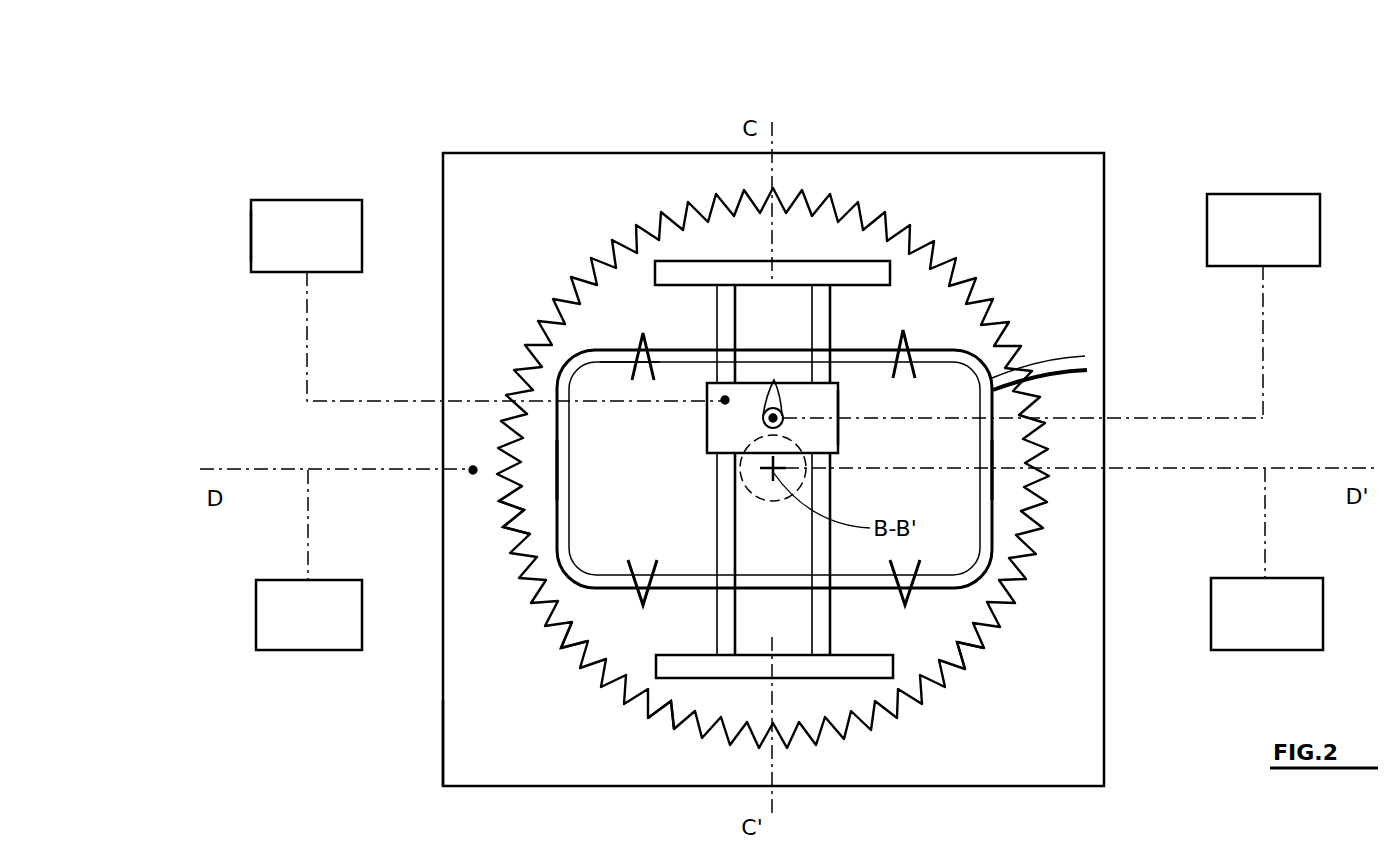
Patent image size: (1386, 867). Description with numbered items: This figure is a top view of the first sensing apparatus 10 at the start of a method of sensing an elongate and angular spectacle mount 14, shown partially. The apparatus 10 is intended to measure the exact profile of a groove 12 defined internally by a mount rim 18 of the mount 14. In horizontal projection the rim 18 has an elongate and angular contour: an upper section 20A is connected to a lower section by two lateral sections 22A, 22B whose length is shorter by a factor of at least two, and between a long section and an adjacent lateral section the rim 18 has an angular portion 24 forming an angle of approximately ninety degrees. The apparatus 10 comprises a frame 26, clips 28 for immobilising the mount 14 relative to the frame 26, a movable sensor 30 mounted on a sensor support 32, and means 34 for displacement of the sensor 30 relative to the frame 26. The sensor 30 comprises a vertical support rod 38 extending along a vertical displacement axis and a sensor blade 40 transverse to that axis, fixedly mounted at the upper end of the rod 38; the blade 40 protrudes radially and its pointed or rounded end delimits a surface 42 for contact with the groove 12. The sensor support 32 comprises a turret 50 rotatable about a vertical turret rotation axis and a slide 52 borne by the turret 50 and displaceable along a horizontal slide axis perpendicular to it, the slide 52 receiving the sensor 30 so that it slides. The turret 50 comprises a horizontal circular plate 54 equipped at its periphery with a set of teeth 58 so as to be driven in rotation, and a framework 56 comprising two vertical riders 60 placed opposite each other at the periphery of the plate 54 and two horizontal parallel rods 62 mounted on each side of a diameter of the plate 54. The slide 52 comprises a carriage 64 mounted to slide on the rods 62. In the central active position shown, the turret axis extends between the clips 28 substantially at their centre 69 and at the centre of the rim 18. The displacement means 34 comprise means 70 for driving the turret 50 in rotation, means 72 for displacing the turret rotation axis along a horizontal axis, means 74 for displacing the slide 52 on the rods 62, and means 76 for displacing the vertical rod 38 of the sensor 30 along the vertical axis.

The sensing apparatus 10 is at (1025, 122).
The groove 12 is at (605, 375).
The mount 14 is at (967, 330).
The mount rim 18 is at (547, 555).
The upper section 20A is at (852, 357).
The lateral section 22A is at (557, 518).
The lateral section 22B is at (988, 512).
The angular portion 24 is at (563, 368).
The frame 26 is at (400, 743).
The clips 28 is at (908, 342).
The sensor 30 is at (838, 440).
The sensor support 32 is at (613, 207).
The displacement means 34 is at (316, 172).
The support rod 38 is at (760, 427).
The sensor blade 40 is at (776, 392).
The contact surface 42 is at (770, 386).
The turret 50 is at (657, 723).
The slide 52 is at (843, 406).
The circular plate 54 is at (970, 610).
The framework 56 is at (822, 686).
The set of teeth 58 is at (557, 630).
The vertical riders 60 is at (672, 273).
The horizontal rods 62 is at (815, 548).
The carriage 64 is at (797, 430).
The centre 69 is at (773, 472).
The turret drive means 70 is at (1267, 559).
The axis displacement means 72 is at (309, 560).
The slide displacement means 74 is at (490, 302).
The rod displacement means 76 is at (1263, 305).